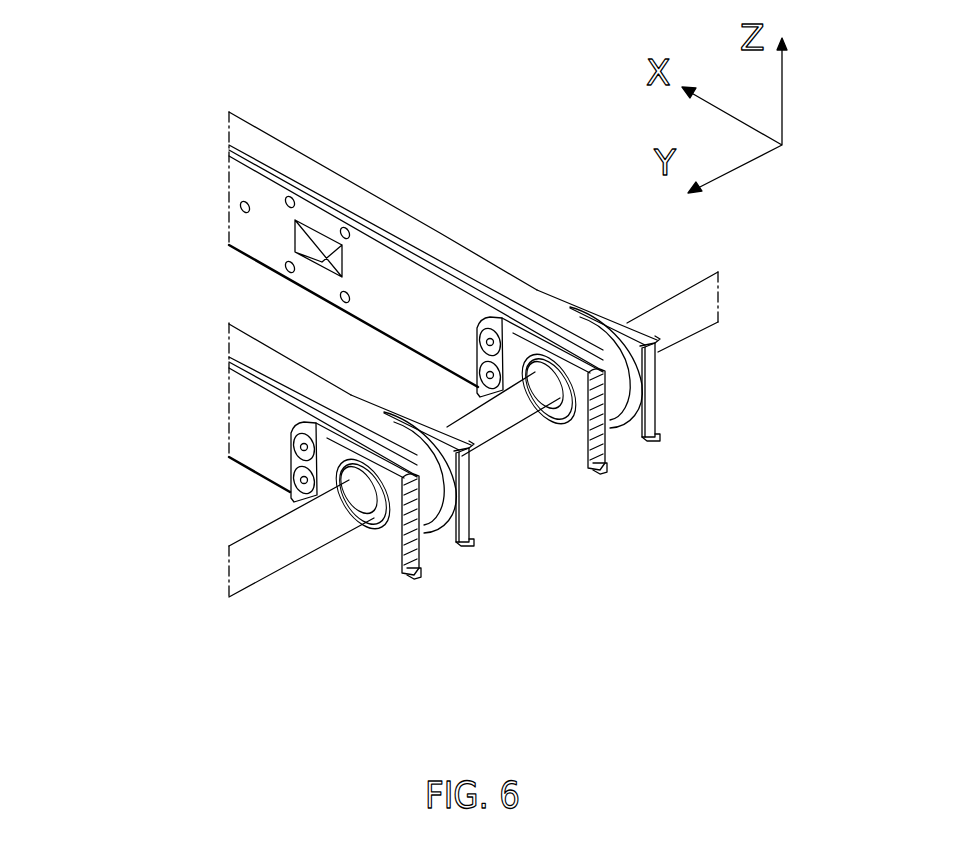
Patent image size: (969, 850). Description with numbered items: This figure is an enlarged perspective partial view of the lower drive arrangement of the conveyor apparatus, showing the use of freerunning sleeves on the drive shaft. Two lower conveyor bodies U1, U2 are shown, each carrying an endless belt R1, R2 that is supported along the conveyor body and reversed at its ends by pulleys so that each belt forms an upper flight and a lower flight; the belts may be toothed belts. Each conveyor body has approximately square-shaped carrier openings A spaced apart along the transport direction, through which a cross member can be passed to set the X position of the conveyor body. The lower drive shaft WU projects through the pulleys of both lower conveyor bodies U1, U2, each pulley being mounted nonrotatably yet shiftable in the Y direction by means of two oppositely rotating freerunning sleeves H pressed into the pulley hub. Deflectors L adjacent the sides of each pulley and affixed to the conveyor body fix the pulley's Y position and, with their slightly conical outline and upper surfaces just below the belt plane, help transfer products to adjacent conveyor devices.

The lower conveyor body U1 is at (346, 266).
The lower conveyor body U2 is at (250, 460).
The endless belt R1 is at (448, 243).
The endless belt R2 is at (243, 447).
The carrier opening A is at (313, 260).
The freerunning sleeve H is at (551, 417).
The deflector L is at (655, 437).
The lower drive shaft WU is at (683, 315).